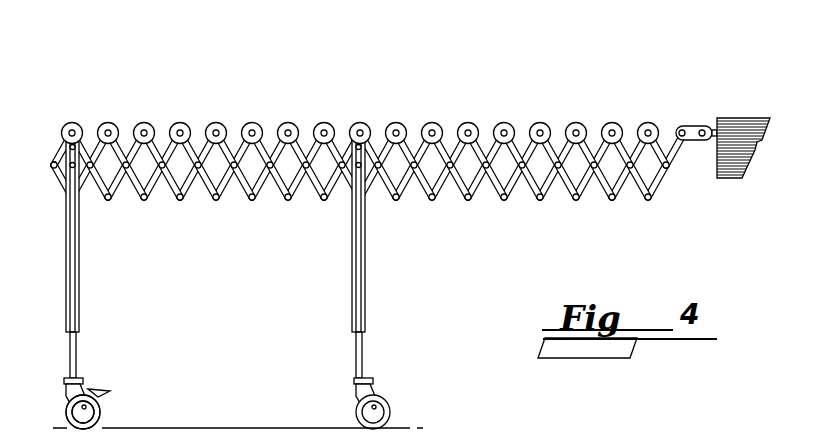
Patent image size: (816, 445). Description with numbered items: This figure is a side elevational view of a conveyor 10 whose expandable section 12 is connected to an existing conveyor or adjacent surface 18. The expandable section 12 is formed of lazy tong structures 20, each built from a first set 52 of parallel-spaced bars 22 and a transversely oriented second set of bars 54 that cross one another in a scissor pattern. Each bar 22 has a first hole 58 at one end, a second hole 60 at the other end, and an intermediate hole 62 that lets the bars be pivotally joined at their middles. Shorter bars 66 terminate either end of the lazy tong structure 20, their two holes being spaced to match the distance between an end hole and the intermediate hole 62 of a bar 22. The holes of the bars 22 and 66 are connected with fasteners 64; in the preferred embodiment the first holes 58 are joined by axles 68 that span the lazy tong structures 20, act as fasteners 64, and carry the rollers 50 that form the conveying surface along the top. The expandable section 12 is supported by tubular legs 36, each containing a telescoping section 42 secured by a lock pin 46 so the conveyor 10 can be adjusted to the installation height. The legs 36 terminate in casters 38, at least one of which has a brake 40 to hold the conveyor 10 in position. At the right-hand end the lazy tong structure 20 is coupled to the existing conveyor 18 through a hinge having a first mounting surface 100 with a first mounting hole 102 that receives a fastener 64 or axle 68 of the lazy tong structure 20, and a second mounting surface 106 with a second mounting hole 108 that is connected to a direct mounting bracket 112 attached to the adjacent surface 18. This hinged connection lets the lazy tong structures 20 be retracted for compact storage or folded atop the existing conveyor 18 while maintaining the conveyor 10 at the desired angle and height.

The conveyor 10 is at (303, 93).
The expandable section 12 is at (362, 72).
The existing conveyor or adjacent surface 18 is at (744, 120).
The lazy tong structure 20 is at (487, 137).
The bar 22 is at (447, 137).
The leg 36 is at (363, 290).
The caster 38 is at (103, 408).
The brake 40 is at (102, 382).
The telescoping section 42 is at (77, 343).
The lock pin 46 is at (80, 318).
The roller 50 is at (143, 128).
The first set of bars 52 is at (188, 197).
The second set of bars 54 is at (172, 196).
The first hole 58 is at (250, 130).
The second hole 60 is at (248, 199).
The intermediate hole 62 is at (198, 135).
The fastener 64 is at (288, 200).
The shorter bar 66 is at (57, 176).
The axle 68 is at (577, 130).
The first mounting surface 100 is at (682, 128).
The first mounting hole 102 is at (678, 130).
The second mounting surface 106 is at (692, 140).
The second mounting hole 108 is at (712, 150).
The direct mounting bracket 112 is at (702, 128).